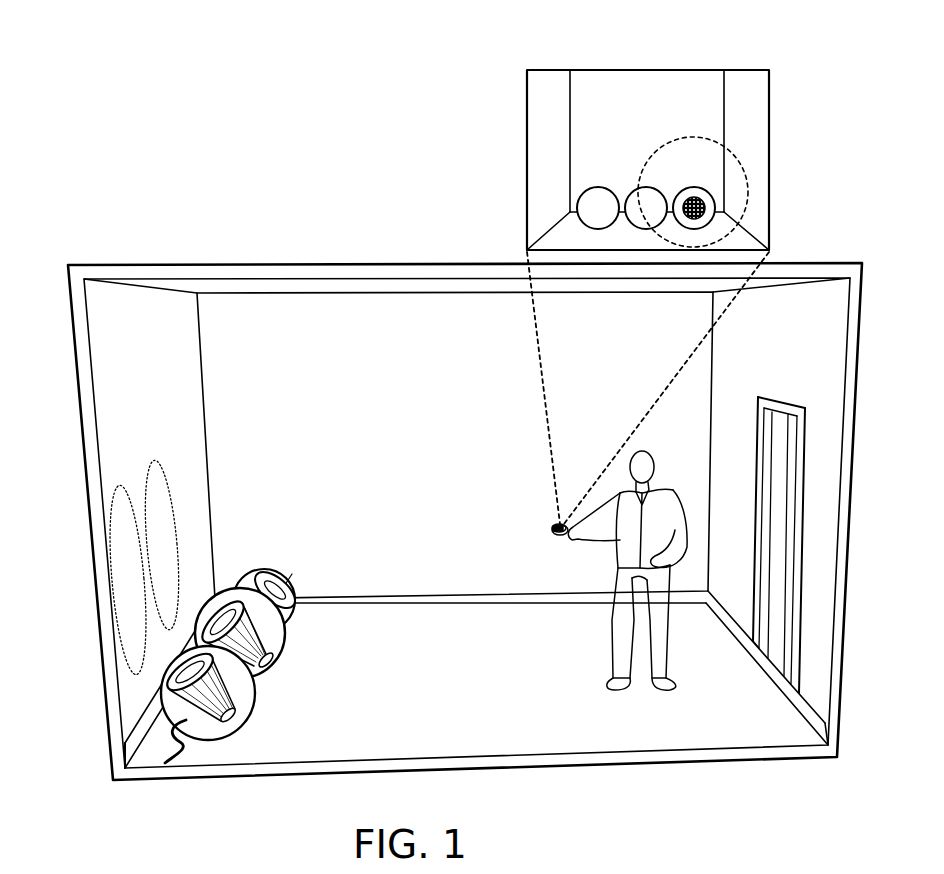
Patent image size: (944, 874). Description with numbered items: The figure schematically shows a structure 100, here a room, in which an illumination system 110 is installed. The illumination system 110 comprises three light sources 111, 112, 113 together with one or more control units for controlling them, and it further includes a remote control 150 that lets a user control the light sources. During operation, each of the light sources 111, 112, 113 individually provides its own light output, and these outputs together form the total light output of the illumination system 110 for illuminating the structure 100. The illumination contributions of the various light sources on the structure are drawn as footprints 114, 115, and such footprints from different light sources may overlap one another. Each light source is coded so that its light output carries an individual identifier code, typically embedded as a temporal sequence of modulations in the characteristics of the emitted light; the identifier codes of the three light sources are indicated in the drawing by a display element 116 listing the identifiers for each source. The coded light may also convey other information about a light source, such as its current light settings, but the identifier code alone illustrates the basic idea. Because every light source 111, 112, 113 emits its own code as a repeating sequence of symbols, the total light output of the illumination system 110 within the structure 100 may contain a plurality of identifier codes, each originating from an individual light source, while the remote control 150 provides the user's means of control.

The structure 100 is at (448, 399).
The illumination system 110 is at (44, 632).
The light source 111 is at (163, 667).
The light source 112 is at (270, 640).
The light source 113 is at (247, 580).
The footprint 114 is at (119, 518).
The footprint 115 is at (165, 503).
The user interface display 116 is at (702, 137).
The remote control 150 is at (558, 522).